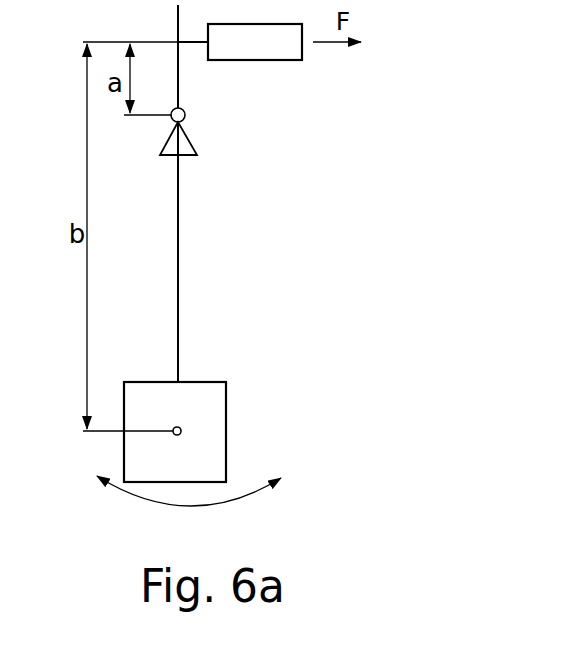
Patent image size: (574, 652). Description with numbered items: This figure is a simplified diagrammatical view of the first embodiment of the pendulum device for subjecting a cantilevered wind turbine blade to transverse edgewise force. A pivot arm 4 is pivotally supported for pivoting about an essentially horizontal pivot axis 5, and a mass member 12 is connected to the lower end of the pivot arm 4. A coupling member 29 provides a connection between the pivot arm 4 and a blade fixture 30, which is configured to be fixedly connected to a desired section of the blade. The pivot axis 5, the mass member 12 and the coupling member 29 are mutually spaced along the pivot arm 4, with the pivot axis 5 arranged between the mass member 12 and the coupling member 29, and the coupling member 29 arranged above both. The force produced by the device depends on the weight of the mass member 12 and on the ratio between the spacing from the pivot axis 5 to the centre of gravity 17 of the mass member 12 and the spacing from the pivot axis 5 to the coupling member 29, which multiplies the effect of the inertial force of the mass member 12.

The pivot arm 4 is at (178, 262).
The pivot axis 5 is at (185, 117).
The mass member 12 is at (210, 398).
The centre of gravity 17 is at (181, 431).
The coupling member 29 is at (192, 45).
The blade fixture 30 is at (287, 42).